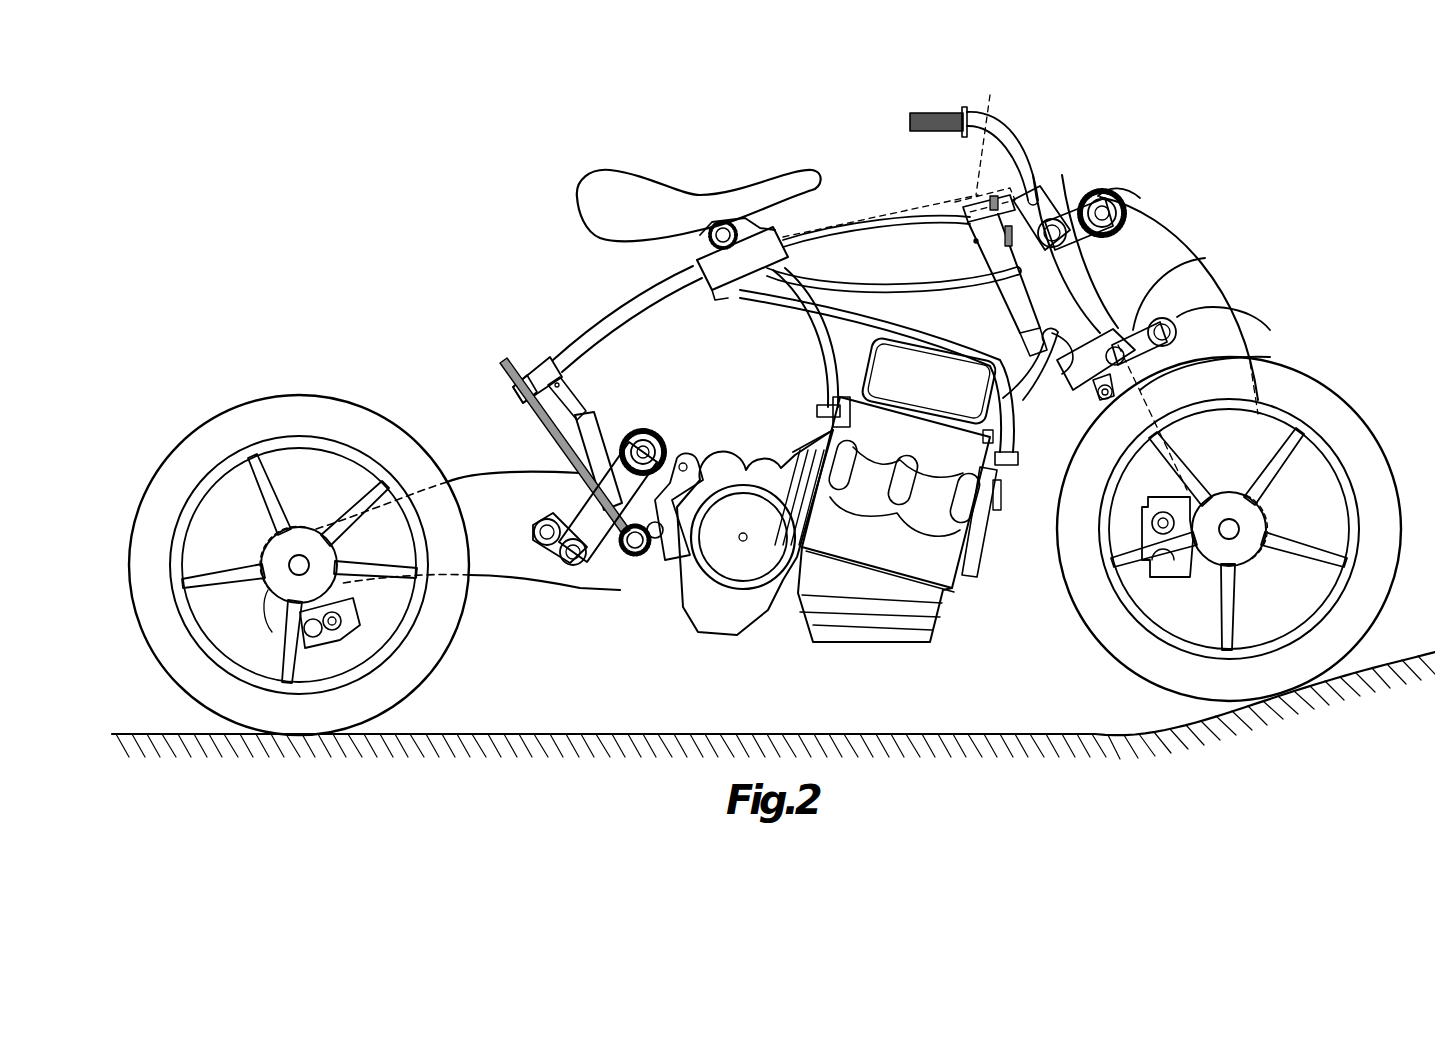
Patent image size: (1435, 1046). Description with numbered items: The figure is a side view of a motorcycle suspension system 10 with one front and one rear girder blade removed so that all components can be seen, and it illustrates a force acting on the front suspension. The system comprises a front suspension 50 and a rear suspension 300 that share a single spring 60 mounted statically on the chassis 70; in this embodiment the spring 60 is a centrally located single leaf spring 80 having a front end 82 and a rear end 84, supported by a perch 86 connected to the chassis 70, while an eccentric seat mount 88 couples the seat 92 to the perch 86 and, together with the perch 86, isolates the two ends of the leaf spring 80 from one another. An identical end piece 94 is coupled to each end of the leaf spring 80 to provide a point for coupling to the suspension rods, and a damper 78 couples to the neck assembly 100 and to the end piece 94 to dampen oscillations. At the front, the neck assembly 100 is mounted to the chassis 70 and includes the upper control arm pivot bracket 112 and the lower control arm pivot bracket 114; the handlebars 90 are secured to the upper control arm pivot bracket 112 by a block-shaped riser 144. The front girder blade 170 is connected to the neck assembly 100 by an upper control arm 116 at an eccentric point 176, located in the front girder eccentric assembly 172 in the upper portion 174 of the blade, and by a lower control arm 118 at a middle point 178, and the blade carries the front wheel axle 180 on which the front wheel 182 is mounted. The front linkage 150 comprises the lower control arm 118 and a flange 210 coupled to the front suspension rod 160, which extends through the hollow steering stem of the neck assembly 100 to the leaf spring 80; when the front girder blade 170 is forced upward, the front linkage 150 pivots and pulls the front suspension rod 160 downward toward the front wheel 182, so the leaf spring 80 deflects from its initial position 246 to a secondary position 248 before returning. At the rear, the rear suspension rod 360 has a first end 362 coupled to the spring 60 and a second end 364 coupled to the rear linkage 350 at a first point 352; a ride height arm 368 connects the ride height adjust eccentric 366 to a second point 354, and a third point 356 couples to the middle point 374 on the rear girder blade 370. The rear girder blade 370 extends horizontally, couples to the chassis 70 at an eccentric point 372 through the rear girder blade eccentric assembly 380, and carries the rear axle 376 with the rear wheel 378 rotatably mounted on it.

The motorcycle suspension system 10 is at (498, 202).
The front suspension 50 is at (1322, 215).
The spring 60 is at (605, 332).
The chassis 70 is at (772, 305).
The damper 78 is at (982, 262).
The leaf spring 80 is at (790, 232).
The front end 82 is at (940, 210).
The rear end 84 is at (565, 350).
The perch 86 is at (723, 290).
The eccentric seat mount 88 is at (700, 242).
The handlebars 90 is at (1020, 133).
The seat 92 is at (690, 190).
The end piece 94 is at (548, 377).
The neck assembly 100 is at (997, 300).
The upper control arm pivot bracket 112 is at (1032, 322).
The lower control arm pivot bracket 114 is at (1097, 390).
The upper control arm 116 is at (1097, 172).
The lower control arm 118 is at (1145, 312).
The riser 144 is at (1050, 205).
The front linkage 150 is at (1250, 365).
The front suspension rod 160 is at (990, 195).
The front girder blades 170 is at (1230, 346).
The front girder eccentric assembly 172 is at (1150, 201).
The upper portion 174 is at (1165, 233).
The eccentric point 176 is at (1118, 186).
The middle point 178 is at (1178, 328).
The front wheel axle 180 is at (1238, 528).
The front wheel 182 is at (1366, 440).
The flange 210 is at (1090, 432).
The initial position 246 is at (978, 110).
The secondary position 248 is at (972, 240).
The rear suspension 300 is at (462, 315).
The rear linkage 350 is at (600, 563).
The first point 352 is at (635, 560).
The second point 354 is at (571, 566).
The third point 356 is at (556, 560).
The rear suspension rod 360 is at (505, 360).
The first end 362 is at (500, 372).
The second end 364 is at (617, 548).
The ride height adjust eccentric 366 is at (654, 430).
The ride height arm 368 is at (558, 477).
The rear girder blades 370 is at (470, 476).
The eccentric point 372 is at (654, 542).
The middle point 374 is at (536, 538).
The rear axle 376 is at (290, 563).
The rear wheel 378 is at (172, 440).
The rear girder blade eccentric assembly 380 is at (570, 449).